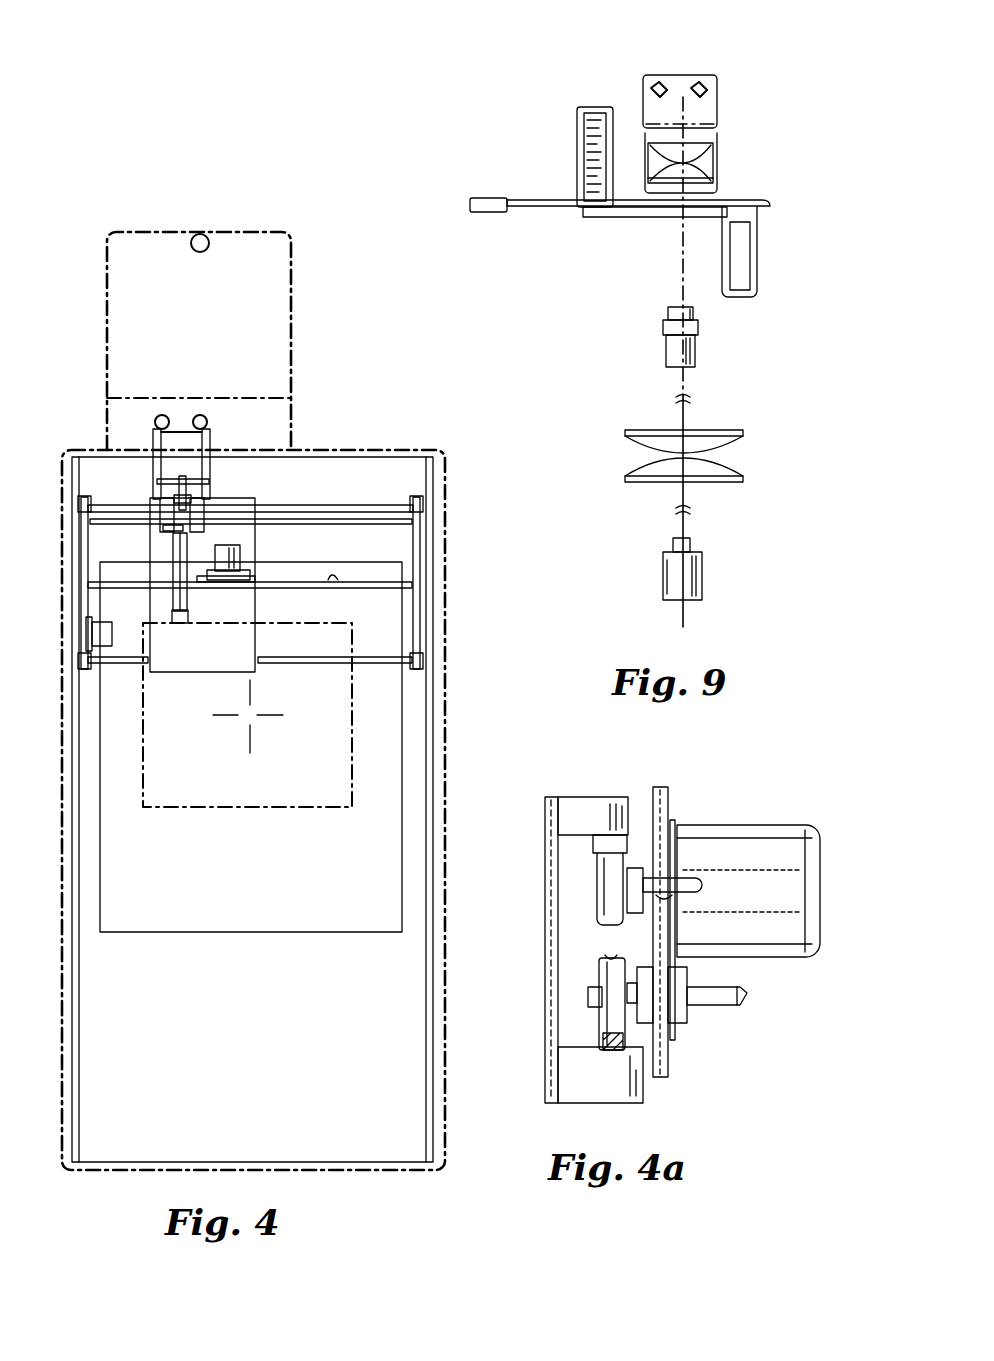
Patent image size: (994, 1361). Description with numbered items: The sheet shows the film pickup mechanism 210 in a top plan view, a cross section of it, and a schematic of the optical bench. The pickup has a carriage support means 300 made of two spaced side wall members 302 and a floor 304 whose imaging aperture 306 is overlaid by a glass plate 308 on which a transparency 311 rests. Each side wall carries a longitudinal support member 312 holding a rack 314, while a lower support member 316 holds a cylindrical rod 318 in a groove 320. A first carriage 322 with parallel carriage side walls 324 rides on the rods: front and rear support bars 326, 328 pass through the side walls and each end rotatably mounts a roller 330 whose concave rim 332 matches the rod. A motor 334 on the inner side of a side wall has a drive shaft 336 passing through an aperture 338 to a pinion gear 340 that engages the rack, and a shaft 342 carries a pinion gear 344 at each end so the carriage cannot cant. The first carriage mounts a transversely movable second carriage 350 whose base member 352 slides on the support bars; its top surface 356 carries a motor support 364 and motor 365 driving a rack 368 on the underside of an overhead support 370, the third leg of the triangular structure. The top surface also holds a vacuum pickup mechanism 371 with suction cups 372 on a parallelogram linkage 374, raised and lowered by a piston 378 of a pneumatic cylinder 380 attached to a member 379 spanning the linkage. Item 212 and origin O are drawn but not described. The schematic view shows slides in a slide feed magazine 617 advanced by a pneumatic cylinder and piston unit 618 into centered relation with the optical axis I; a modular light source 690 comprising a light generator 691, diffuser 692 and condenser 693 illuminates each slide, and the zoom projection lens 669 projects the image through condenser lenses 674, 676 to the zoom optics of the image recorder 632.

In FIG. 4, the cover flap 212 is at (212, 230).
In FIG. 4, the film pickup mechanism 210 is at (270, 434).
In FIG. 4, the vacuum pickup mechanism 371 is at (125, 440).
In FIG. 4, the suction cups 372 is at (202, 416).
In FIG. 4, the parallelogram linkage 374 is at (212, 450).
In FIG. 4, the member 379 is at (195, 478).
In FIG. 4, the first carriage 322 is at (358, 478).
In FIG. 4, the carriage side walls 324 is at (88, 502).
In FIG. 4A, the carriage side walls 324 is at (662, 806).
In FIG. 4, the front support bar 326 is at (376, 504).
In FIG. 4, the rear support bar 328 is at (384, 666).
In FIG. 4, the shaft 342 is at (355, 524).
In FIG. 4A, the shaft 342 is at (652, 880).
In FIG. 4, the second carriage 350 is at (262, 497).
In FIG. 4, the base member 352 is at (228, 652).
In FIG. 4, the top surface 356 is at (248, 644).
In FIG. 4, the piston 378 is at (175, 529).
In FIG. 4, the cylinder 380 is at (172, 595).
In FIG. 4, the motor 365 is at (238, 547).
In FIG. 4, the motor support 364 is at (254, 581).
In FIG. 4, the overhead support 370 is at (250, 598).
In FIG. 4, the rack 368 is at (338, 582).
In FIG. 4, the motor 334 is at (108, 648).
In FIG. 4A, the motor 334 is at (782, 840).
In FIG. 4, the carriage support means 300 is at (458, 625).
In FIG. 4, the side wall members 302 is at (62, 785).
In FIG. 4A, the side wall members 302 is at (546, 896).
In FIG. 4, the imaging aperture 306 is at (216, 762).
In FIG. 4, the origin O is at (250, 715).
In FIG. 4, the transparency 311 is at (280, 808).
In FIG. 4, the glass plate 308 is at (324, 933).
In FIG. 4, the support member 312 is at (80, 983).
In FIG. 4A, the support member 312 is at (578, 808).
In FIG. 4, the floor 304 is at (246, 1089).
In FIG. 4A, the rack 314 is at (595, 845).
In FIG. 4A, the lower support member 316 is at (568, 1062).
In FIG. 4A, the rod 318 is at (655, 1044).
In FIG. 4A, the groove 320 is at (613, 1050).
In FIG. 4A, the roller 330 is at (600, 972).
In FIG. 4A, the rim 332 is at (616, 960).
In FIG. 4A, the drive shaft 336 is at (664, 896).
In FIG. 4A, the aperture 338 is at (660, 890).
In FIG. 4A, the pinion gear 340 is at (617, 922).
In FIG. 4A, the pinion gear 344 is at (600, 878).
In FIG. 9, the modular light source 690 is at (776, 135).
In FIG. 9, the light generator 691 is at (716, 96).
In FIG. 9, the diffuser 692 is at (718, 132).
In FIG. 9, the condenser 693 is at (714, 174).
In FIG. 9, the slide feed magazine 617 is at (577, 148).
In FIG. 9, the slide advance pneumatic cylinder and piston unit 618 is at (532, 212).
In FIG. 9, the optical axis I is at (678, 238).
In FIG. 9, the zoom projection lens 669 is at (698, 358).
In FIG. 9, the condenser lens 674 is at (730, 443).
In FIG. 9, the condenser lens 676 is at (737, 470).
In FIG. 9, the image recorder 632 is at (708, 578).